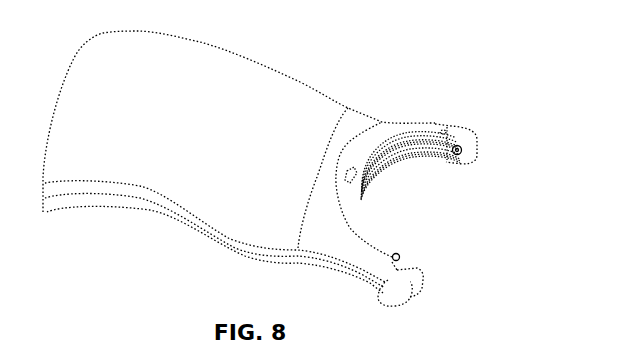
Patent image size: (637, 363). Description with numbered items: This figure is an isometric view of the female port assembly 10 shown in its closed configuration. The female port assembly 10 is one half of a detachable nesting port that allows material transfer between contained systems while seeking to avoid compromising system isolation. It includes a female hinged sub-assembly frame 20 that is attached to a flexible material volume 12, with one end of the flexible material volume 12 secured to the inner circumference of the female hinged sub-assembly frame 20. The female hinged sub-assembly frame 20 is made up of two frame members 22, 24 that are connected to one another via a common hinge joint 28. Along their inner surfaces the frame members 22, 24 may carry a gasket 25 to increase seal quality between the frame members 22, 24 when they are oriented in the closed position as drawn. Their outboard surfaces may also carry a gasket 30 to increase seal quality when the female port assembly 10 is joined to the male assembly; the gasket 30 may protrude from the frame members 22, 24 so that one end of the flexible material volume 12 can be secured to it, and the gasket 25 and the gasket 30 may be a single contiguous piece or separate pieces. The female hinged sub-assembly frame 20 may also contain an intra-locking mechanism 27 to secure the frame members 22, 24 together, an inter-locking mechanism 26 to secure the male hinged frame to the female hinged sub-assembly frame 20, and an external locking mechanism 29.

The female port assembly 10 is at (138, 188).
The flexible material volume 12 is at (103, 75).
The female hinged sub-assembly frame 20 is at (440, 163).
The frame member 22 is at (433, 123).
The frame member 24 is at (409, 121).
The gasket 25 is at (410, 156).
The inter-locking mechanism 26 is at (397, 170).
The intra-locking mechanism 27 is at (358, 186).
The common hinge joint 28 is at (471, 150).
The external locking mechanism 29 is at (402, 255).
The gasket 30 is at (360, 120).